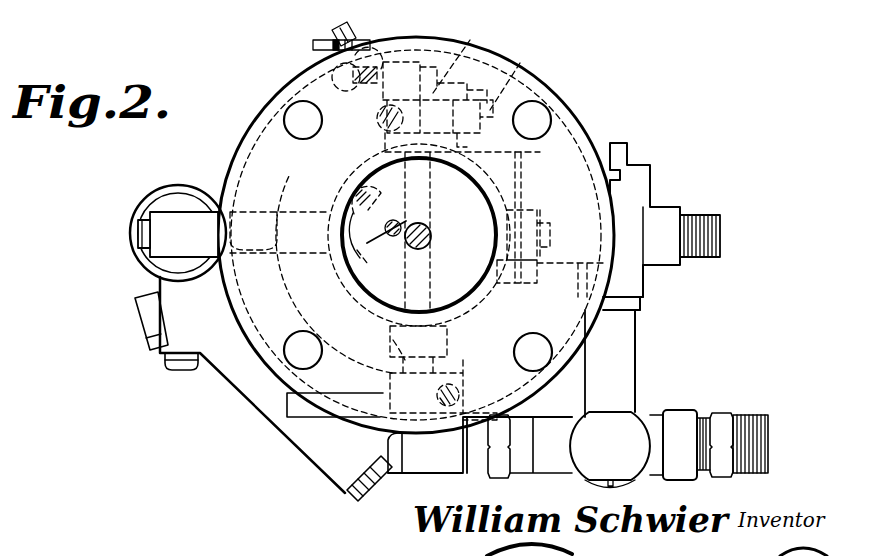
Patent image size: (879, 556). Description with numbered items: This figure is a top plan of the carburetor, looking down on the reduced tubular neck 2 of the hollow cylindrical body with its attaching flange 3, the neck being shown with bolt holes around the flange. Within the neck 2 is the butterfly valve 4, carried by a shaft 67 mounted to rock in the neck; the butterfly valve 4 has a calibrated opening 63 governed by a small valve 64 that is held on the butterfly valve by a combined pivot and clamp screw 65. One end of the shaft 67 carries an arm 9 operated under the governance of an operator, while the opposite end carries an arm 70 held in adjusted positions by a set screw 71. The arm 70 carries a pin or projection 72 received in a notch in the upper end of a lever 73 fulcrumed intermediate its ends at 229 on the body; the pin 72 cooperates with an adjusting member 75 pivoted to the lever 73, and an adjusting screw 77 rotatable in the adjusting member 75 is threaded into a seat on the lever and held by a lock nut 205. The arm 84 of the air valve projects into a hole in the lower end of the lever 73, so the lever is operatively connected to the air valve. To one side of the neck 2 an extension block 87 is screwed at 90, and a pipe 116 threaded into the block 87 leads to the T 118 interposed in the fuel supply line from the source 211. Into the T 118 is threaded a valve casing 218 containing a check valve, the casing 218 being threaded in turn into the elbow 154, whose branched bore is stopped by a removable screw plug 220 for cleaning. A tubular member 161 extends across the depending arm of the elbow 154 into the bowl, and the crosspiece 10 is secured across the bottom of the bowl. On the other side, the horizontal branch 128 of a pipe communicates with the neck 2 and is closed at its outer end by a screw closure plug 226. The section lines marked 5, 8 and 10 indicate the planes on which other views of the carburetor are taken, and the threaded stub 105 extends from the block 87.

The reduced tubular neck 2 is at (345, 176).
The attaching flange 3 is at (275, 148).
The butterfly valve 4 is at (460, 283).
The section line 5- 5 is at (176, 235).
The section line 8- 8 is at (418, 2).
The arm 9 is at (293, 437).
The crosspiece 10 is at (460, 447).
The calibrated opening 63 is at (378, 190).
The valve 64 is at (363, 250).
The combined pivot and clamp screw 65 is at (408, 204).
The shaft 67 is at (393, 340).
The arm 70 is at (553, 83).
The set screw 71 is at (385, 108).
The pin or projection 72 is at (513, 58).
The lever 73 is at (313, 45).
The adjusting member 75 is at (468, 44).
The adjusting screw 77 is at (300, 72).
The arm of the air valve 84 is at (340, 33).
The extension block 87 is at (630, 217).
The screw connection 90 is at (550, 222).
The threaded inlet stub 105 is at (700, 220).
The pipe 116 is at (610, 420).
The T 118 is at (648, 414).
The horizontal branch 128 is at (200, 220).
The elbow 154 is at (270, 388).
The tubular member 161 is at (143, 300).
The lock nut 205 is at (378, 92).
The source of liquid fuel supply 211 is at (748, 420).
The valve casing 218 is at (482, 462).
The screw plug 220 is at (357, 492).
The screw closure plug 226 is at (147, 221).
The plug 229 is at (170, 370).